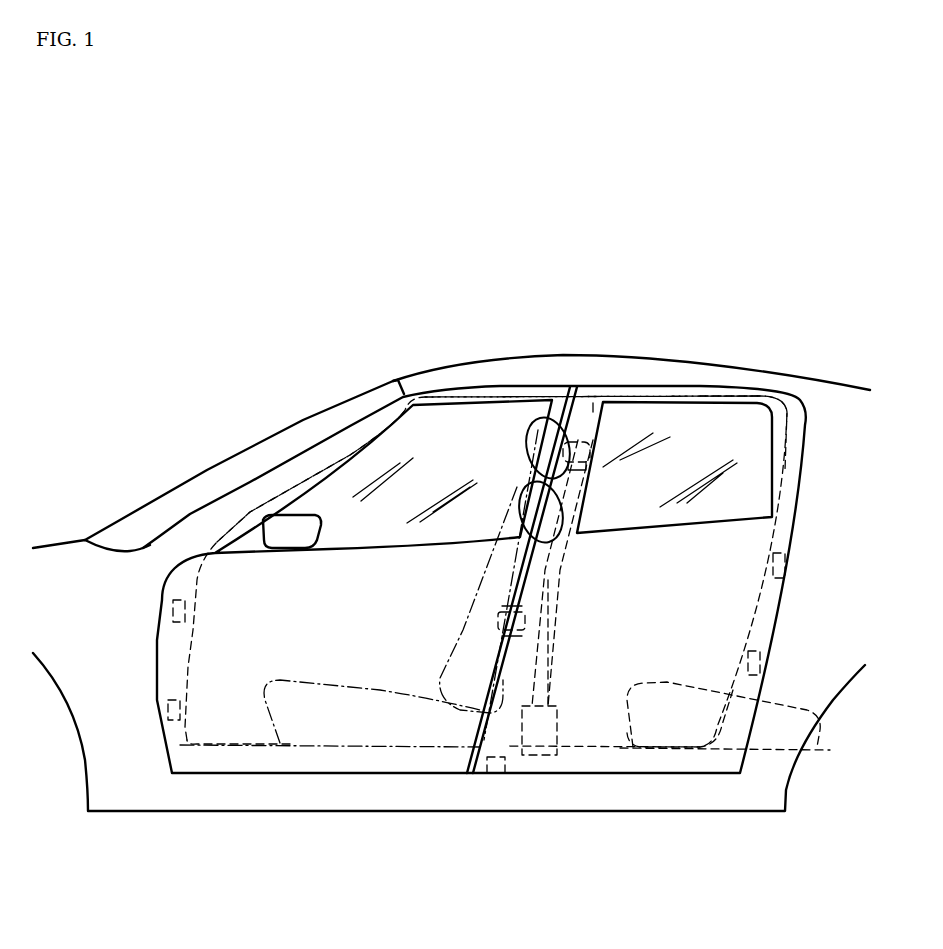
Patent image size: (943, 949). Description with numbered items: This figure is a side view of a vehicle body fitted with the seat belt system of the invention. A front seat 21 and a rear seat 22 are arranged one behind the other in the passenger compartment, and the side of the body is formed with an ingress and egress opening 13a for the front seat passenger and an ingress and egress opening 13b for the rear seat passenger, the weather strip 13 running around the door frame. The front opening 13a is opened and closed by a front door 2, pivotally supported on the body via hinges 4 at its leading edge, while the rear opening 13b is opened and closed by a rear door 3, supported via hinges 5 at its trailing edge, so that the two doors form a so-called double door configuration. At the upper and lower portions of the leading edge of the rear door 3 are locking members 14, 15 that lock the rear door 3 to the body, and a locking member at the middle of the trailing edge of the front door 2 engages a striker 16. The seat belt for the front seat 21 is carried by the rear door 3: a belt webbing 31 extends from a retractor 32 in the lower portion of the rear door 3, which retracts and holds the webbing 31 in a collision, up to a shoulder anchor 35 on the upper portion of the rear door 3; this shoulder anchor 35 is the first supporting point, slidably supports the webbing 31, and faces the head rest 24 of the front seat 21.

The front door 2 is at (305, 773).
The rear door 3 is at (628, 773).
The hinges 4 is at (167, 607).
The hinges 5 is at (786, 566).
The weather strip 13 is at (628, 405).
The ingress and egress opening for the front seat passenger 13a is at (313, 474).
The ingress and egress opening for the rear seat passenger 13b is at (753, 405).
The locking member 14 is at (608, 443).
The locking member 15 is at (493, 778).
The striker 16 is at (497, 614).
The front seat 21 is at (450, 641).
The rear seat 22 is at (762, 760).
The head rest 24 is at (540, 437).
The belt webbing 31 is at (553, 661).
The retractor 32 is at (557, 718).
The shoulder anchor 35 is at (588, 472).